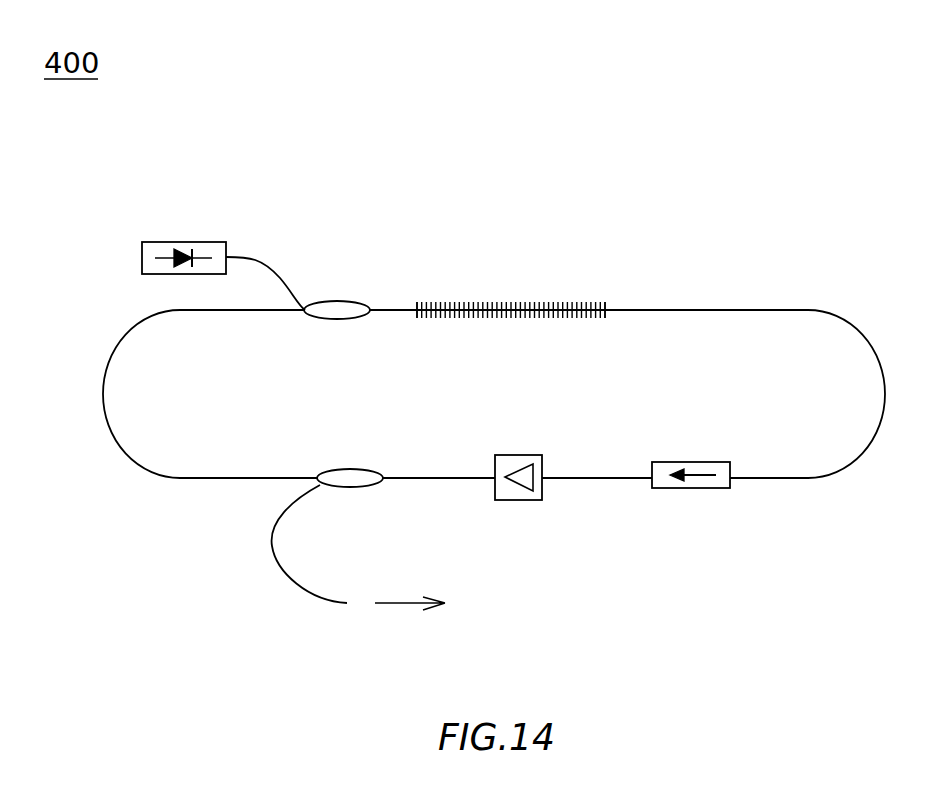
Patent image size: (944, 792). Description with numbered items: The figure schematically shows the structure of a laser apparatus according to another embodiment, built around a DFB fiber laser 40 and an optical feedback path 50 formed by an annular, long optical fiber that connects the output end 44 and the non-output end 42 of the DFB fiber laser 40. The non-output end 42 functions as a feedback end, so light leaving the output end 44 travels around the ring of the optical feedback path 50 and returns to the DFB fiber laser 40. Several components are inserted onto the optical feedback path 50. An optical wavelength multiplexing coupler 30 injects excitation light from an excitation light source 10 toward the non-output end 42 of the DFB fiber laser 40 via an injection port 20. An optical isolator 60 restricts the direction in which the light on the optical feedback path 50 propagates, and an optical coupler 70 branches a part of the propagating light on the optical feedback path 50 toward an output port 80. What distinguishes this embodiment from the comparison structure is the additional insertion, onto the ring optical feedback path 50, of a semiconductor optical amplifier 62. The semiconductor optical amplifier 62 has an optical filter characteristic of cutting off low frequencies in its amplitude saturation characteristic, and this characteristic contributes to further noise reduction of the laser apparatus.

The excitation light source 10 is at (193, 242).
The injection port 20 is at (269, 263).
The optical wavelength multiplexing coupler 30 is at (337, 319).
The DFB fiber laser 40 is at (523, 294).
The non-output end 42 is at (417, 309).
The output end 44 is at (608, 309).
The optical feedback path 50 is at (775, 309).
The optical isolator 60 is at (690, 462).
The semiconductor optical amplifier 62 is at (517, 455).
The optical coupler 70 is at (350, 470).
The output port 80 is at (283, 573).